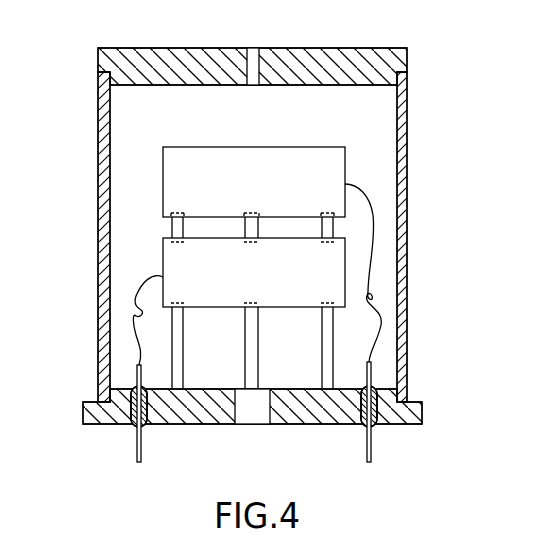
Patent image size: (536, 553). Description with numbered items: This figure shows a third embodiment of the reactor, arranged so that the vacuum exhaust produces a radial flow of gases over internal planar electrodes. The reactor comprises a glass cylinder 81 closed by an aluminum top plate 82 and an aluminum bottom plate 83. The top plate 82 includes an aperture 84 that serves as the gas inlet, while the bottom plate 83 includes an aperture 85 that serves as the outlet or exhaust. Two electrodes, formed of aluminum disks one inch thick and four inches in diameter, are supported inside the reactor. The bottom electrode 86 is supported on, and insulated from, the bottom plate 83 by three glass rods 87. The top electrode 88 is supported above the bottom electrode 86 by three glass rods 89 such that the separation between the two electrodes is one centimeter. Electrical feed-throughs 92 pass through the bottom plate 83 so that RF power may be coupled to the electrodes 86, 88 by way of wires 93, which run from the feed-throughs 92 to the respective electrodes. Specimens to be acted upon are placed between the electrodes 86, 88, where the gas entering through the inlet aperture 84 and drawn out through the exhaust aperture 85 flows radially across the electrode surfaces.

The glass cylinder 81 is at (409, 106).
The aluminum top plate 82 is at (392, 48).
The aluminum bottom plate 83 is at (336, 425).
The aperture 84 is at (255, 48).
The aperture 85 is at (260, 416).
The bottom electrode 86 is at (345, 272).
The glass rods 87 is at (258, 372).
The top electrode 88 is at (330, 152).
The glass rods 89 is at (345, 237).
The electrical feed-through 92 is at (146, 428).
The wires 93 is at (135, 332).